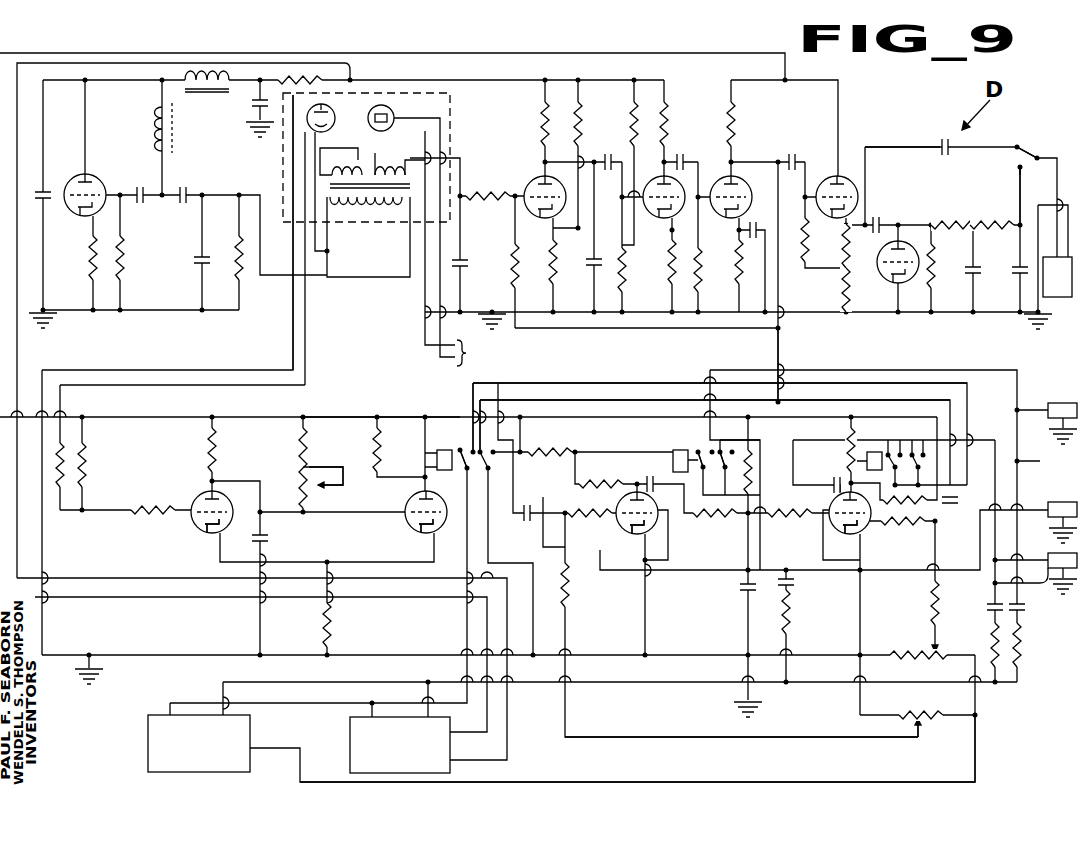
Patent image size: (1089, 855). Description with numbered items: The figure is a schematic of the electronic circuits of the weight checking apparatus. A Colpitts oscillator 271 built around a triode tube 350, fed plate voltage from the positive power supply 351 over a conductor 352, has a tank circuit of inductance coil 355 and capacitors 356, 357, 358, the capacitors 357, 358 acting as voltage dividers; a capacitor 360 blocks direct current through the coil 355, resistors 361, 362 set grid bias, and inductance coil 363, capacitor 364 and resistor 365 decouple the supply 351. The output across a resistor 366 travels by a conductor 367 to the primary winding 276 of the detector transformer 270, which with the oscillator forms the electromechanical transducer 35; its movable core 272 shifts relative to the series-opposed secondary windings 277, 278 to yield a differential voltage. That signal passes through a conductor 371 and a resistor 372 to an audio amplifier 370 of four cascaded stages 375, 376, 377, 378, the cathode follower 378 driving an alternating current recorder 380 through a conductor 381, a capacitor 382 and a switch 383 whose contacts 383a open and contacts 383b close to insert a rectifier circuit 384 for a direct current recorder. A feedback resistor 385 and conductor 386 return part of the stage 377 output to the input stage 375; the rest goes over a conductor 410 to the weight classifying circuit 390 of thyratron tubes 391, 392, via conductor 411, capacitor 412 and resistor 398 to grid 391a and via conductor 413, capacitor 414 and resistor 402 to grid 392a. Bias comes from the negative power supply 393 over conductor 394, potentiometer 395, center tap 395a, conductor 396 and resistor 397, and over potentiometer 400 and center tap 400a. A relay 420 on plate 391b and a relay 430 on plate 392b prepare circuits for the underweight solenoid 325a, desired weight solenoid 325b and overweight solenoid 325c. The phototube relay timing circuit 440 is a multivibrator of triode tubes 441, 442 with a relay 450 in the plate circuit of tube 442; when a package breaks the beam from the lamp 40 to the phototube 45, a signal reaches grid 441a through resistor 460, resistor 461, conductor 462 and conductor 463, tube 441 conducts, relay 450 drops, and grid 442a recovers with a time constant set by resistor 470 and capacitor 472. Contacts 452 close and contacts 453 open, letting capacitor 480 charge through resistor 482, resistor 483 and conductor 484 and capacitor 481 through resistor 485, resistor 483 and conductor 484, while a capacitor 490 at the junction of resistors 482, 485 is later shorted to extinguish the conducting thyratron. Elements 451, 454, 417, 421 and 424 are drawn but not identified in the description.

The conductor 352 is at (17, 352).
The resistor 365 is at (350, 78).
The inductance coil 355 is at (160, 118).
The inductance coil 363 is at (210, 88).
The capacitor 364 is at (258, 105).
The oscillator 271 is at (106, 172).
The triode tube 350 is at (100, 180).
The capacitor 356 is at (45, 197).
The capacitor 360 is at (140, 198).
The capacitor 357 is at (195, 180).
The capacitor 358 is at (200, 260).
The resistor 361 is at (90, 276).
The resistor 362 is at (122, 277).
The resistor 366 is at (240, 279).
The movable core 272 is at (320, 183).
The detector transformer 270 is at (320, 188).
The phototube 45 is at (333, 112).
The lamp 40 is at (393, 112).
The secondary winding 277 is at (332, 170).
The secondary winding 278 is at (378, 170).
The primary winding 276 is at (360, 204).
The electromechanical transducer 35 is at (360, 208).
The conductor 367 is at (355, 278).
The audio amplifier 370 is at (520, 160).
The amplifier stage 375 is at (524, 190).
The resistor 372 is at (503, 200).
The feedback resistor 385 is at (513, 260).
The conductor 371 is at (462, 300).
The amplifier stage 376 is at (658, 215).
The amplifier stage 377 is at (722, 215).
The amplifier stage 378 is at (820, 185).
The conductor 386 is at (685, 328).
The conductor 410 is at (780, 352).
The conductor 381 is at (895, 147).
The capacitor 382 is at (945, 140).
The contacts 383a is at (1027, 152).
The switch 383 is at (1037, 155).
The rectifier circuit 384 is at (898, 238).
The contacts 383b is at (1020, 170).
The alternating current recorder 380 is at (1055, 297).
The conductor 463 is at (232, 370).
The conductor 462 is at (230, 386).
The conductor 484 is at (148, 416).
The phototube relay timing circuit 440 is at (366, 413).
The switch 451 is at (460, 450).
The contacts 452 is at (473, 450).
The contacts 453 is at (482, 410).
The resistor 454 is at (493, 452).
The weight classifying circuit 390 is at (620, 430).
The conductor 411 is at (650, 386).
The switch 424 is at (740, 440).
The conductor 413 is at (855, 403).
The underweight solenoid 325a is at (1063, 403).
The desired weight solenoid 325b is at (1063, 502).
The overweight solenoid 325c is at (1045, 568).
The resistor 470 is at (297, 452).
The potentiometer tap 417 is at (298, 487).
The relay 450 is at (437, 460).
The relay 420 is at (673, 455).
The switch 421 is at (698, 452).
The resistor 483 is at (748, 458).
The relay 430 is at (851, 455).
The capacitor 481 is at (867, 462).
The plate 392b is at (850, 492).
The triode tube 441 is at (195, 498).
The triode tube 442 is at (408, 505).
The capacitor 480 is at (645, 482).
The resistor 398 is at (570, 510).
The plate 391b is at (642, 503).
The thyratron tube 391 is at (658, 530).
The grid 391a is at (622, 530).
The grid 442a is at (405, 525).
The grid 441a is at (205, 525).
The capacitor 472 is at (268, 538).
The resistor 461 is at (60, 490).
The resistor 460 is at (145, 510).
The capacitor 412 is at (530, 520).
The resistor 482 is at (715, 520).
The resistor 485 is at (788, 516).
The thyratron tube 392 is at (840, 530).
The resistor 402 is at (920, 524).
The grid 392a is at (870, 532).
The capacitor 414 is at (950, 508).
The resistor 397 is at (570, 592).
The capacitor 490 is at (746, 592).
The center tap 400a is at (932, 649).
The potentiometer 400 is at (937, 620).
The potentiometer 395 is at (905, 714).
The center tap 395a is at (918, 738).
The conductor 396 is at (825, 740).
The conductor 394 is at (825, 782).
The negative power supply 393 is at (150, 748).
The positive power supply 351 is at (350, 748).